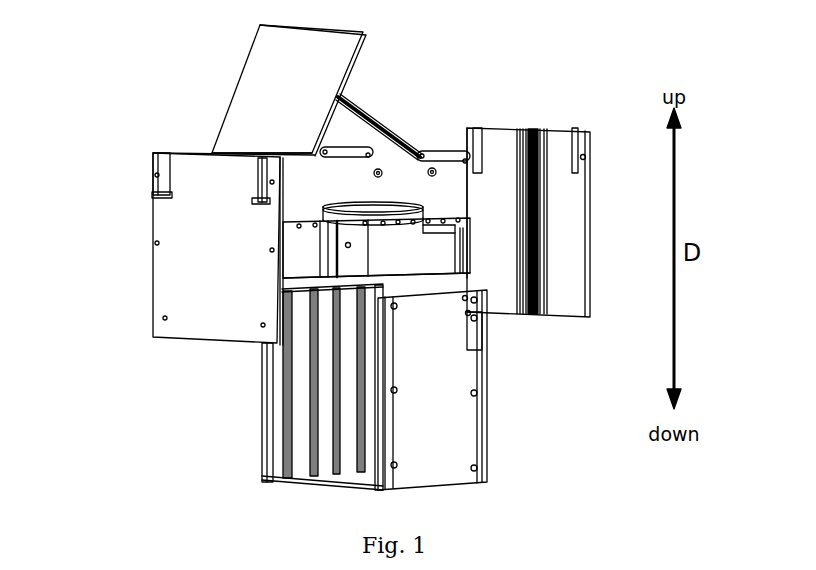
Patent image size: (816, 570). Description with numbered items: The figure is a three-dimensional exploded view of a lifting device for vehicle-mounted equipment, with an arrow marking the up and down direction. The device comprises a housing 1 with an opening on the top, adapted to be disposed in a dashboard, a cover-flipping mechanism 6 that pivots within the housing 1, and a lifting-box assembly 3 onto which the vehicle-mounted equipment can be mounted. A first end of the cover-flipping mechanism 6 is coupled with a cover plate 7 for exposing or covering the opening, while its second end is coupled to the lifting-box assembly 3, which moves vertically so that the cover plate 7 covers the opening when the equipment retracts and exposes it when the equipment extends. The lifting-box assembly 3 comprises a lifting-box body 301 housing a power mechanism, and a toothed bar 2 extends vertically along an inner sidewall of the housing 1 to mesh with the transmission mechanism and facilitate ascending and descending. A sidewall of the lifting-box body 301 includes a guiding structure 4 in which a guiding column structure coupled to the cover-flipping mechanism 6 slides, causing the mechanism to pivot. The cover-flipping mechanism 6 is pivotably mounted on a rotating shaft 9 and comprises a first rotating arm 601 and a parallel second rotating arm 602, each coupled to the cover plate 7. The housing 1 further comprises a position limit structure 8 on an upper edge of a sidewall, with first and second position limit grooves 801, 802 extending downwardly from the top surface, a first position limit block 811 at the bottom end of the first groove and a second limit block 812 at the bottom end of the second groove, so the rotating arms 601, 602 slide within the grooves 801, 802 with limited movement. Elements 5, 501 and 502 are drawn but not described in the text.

The housing 1 is at (420, 430).
The toothed bar 2 is at (545, 318).
The lifting-box assembly 3 is at (355, 261).
The lifting-box body 301 is at (350, 263).
The guiding structure 4 is at (423, 230).
The connecting rod 5 is at (425, 158).
The first pivot 501 is at (432, 172).
The second pivot 502 is at (378, 173).
The cover-flipping mechanism 6 is at (352, 150).
The first rotating arm 601 is at (380, 170).
The second rotating arm 602 is at (310, 153).
The cover plate 7 is at (265, 105).
The position limit structure 8 is at (199, 236).
The first position limit groove 801 is at (262, 182).
The second position limit groove 802 is at (155, 190).
The first position limit block 811 is at (260, 202).
The second limit block 812 is at (155, 197).
The rotating shaft 9 is at (330, 367).